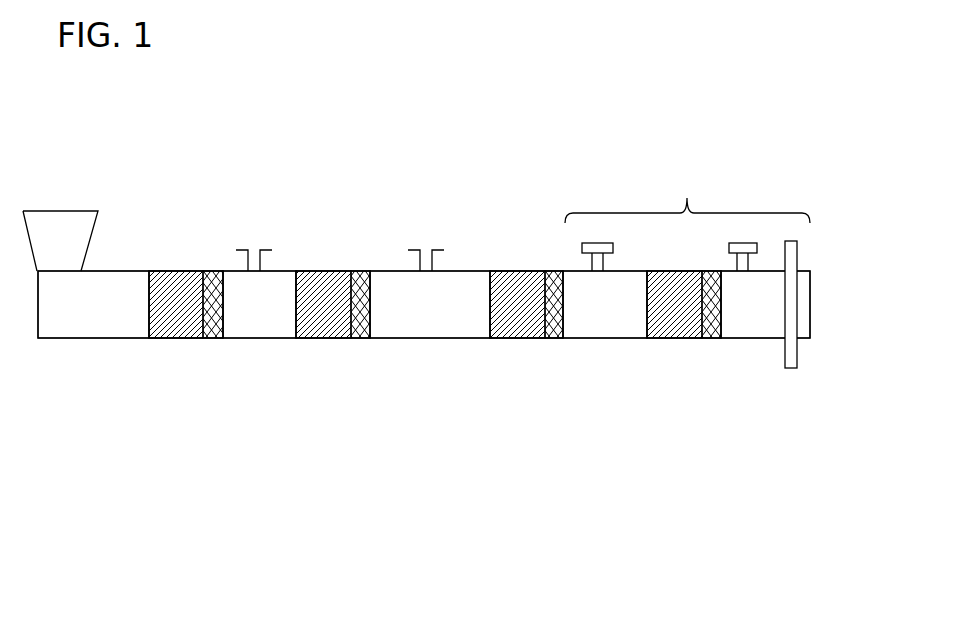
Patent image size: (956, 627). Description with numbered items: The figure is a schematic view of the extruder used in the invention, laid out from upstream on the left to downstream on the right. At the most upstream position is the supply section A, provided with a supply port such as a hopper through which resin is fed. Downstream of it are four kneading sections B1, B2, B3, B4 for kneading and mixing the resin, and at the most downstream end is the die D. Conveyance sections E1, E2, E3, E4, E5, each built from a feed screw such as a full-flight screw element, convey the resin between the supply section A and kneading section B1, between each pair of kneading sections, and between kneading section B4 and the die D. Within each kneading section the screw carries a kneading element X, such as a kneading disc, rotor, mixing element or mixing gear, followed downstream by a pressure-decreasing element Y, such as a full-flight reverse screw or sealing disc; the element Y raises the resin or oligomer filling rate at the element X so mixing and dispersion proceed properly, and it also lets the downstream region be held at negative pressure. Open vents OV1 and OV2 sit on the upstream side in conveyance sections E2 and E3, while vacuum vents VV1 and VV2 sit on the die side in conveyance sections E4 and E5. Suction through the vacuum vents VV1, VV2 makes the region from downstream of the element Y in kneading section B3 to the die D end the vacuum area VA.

The supply section A is at (89, 240).
The conveyance section E1 is at (113, 320).
The conveyance section E2 is at (262, 320).
The conveyance section E3 is at (455, 320).
The conveyance section E4 is at (612, 320).
The conveyance section E5 is at (775, 322).
The kneading section B1 is at (186, 397).
The kneading section B2 is at (335, 397).
The kneading section B3 is at (528, 397).
The kneading section B4 is at (683, 397).
The kneading element X is at (167, 320).
The pressure-decreasing element Y is at (210, 320).
The open vent OV1 is at (254, 251).
The open vent OV2 is at (426, 251).
The vacuum area VA is at (687, 201).
The vacuum vent VV1 is at (597, 247).
The vacuum vent VV2 is at (742, 247).
The die D is at (816, 352).